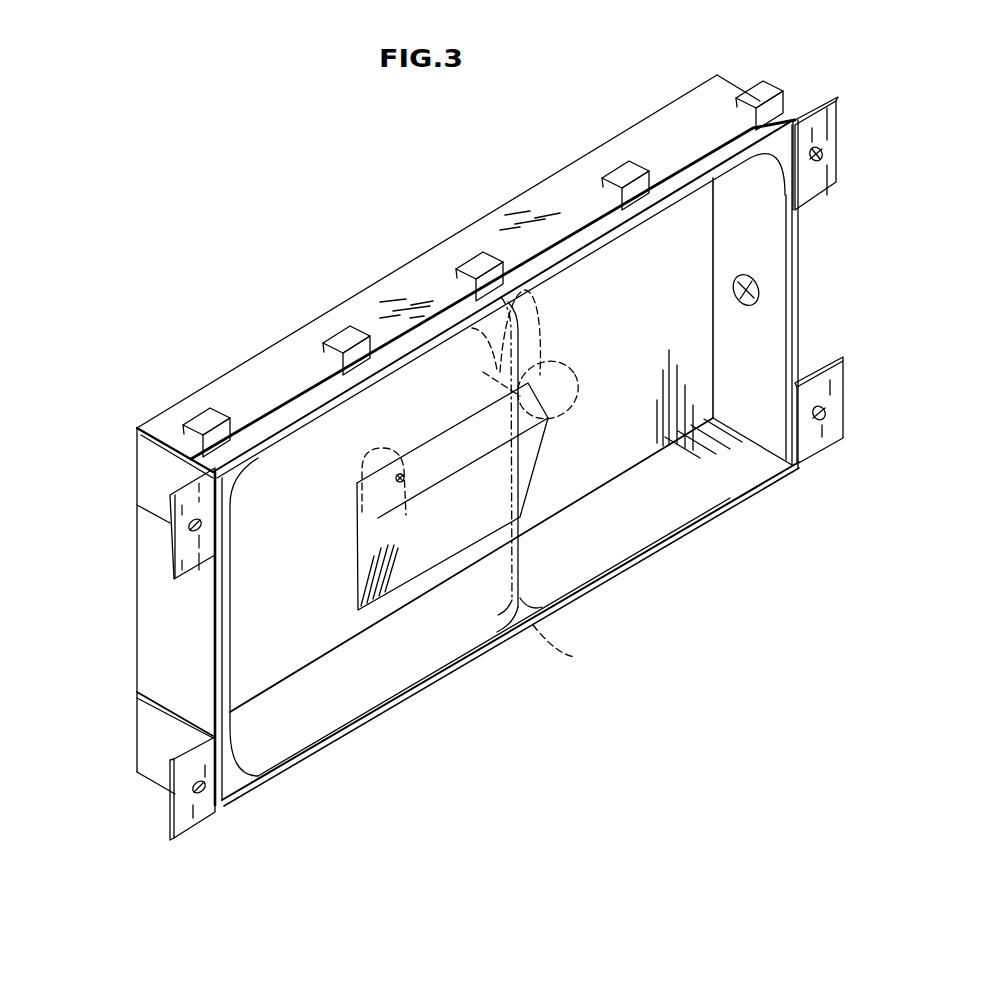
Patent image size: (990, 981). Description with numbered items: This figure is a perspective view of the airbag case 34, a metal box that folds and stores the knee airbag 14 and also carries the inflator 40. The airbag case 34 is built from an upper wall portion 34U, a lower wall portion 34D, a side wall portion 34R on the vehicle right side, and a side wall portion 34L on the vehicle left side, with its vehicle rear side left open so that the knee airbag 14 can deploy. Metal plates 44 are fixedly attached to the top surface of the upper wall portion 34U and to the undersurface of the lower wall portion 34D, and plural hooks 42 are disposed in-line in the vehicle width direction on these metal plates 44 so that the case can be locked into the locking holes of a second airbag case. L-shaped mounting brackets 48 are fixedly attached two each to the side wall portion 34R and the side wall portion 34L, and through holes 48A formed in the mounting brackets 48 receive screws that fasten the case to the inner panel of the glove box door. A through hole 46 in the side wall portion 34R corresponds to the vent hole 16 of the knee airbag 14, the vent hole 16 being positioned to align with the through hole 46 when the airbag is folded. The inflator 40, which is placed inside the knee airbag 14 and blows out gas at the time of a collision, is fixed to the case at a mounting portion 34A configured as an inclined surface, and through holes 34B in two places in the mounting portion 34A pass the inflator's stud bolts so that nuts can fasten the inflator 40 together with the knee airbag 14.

The knee airbag 14 is at (536, 638).
The vent hole 16 is at (733, 290).
The airbag case 34 is at (478, 440).
The mounting portion 34A is at (478, 434).
The through holes 34B is at (397, 477).
The lower wall portion 34D is at (573, 557).
The side wall portion 34L is at (157, 658).
The side wall portion 34R is at (746, 388).
The upper wall portion 34U is at (295, 393).
The inflator 40 is at (583, 382).
The hooks 42 is at (200, 412).
The metal plates 44 is at (420, 270).
The through hole 46 is at (750, 308).
The mounting brackets 48 is at (516, 444).
The through holes 48A is at (203, 527).